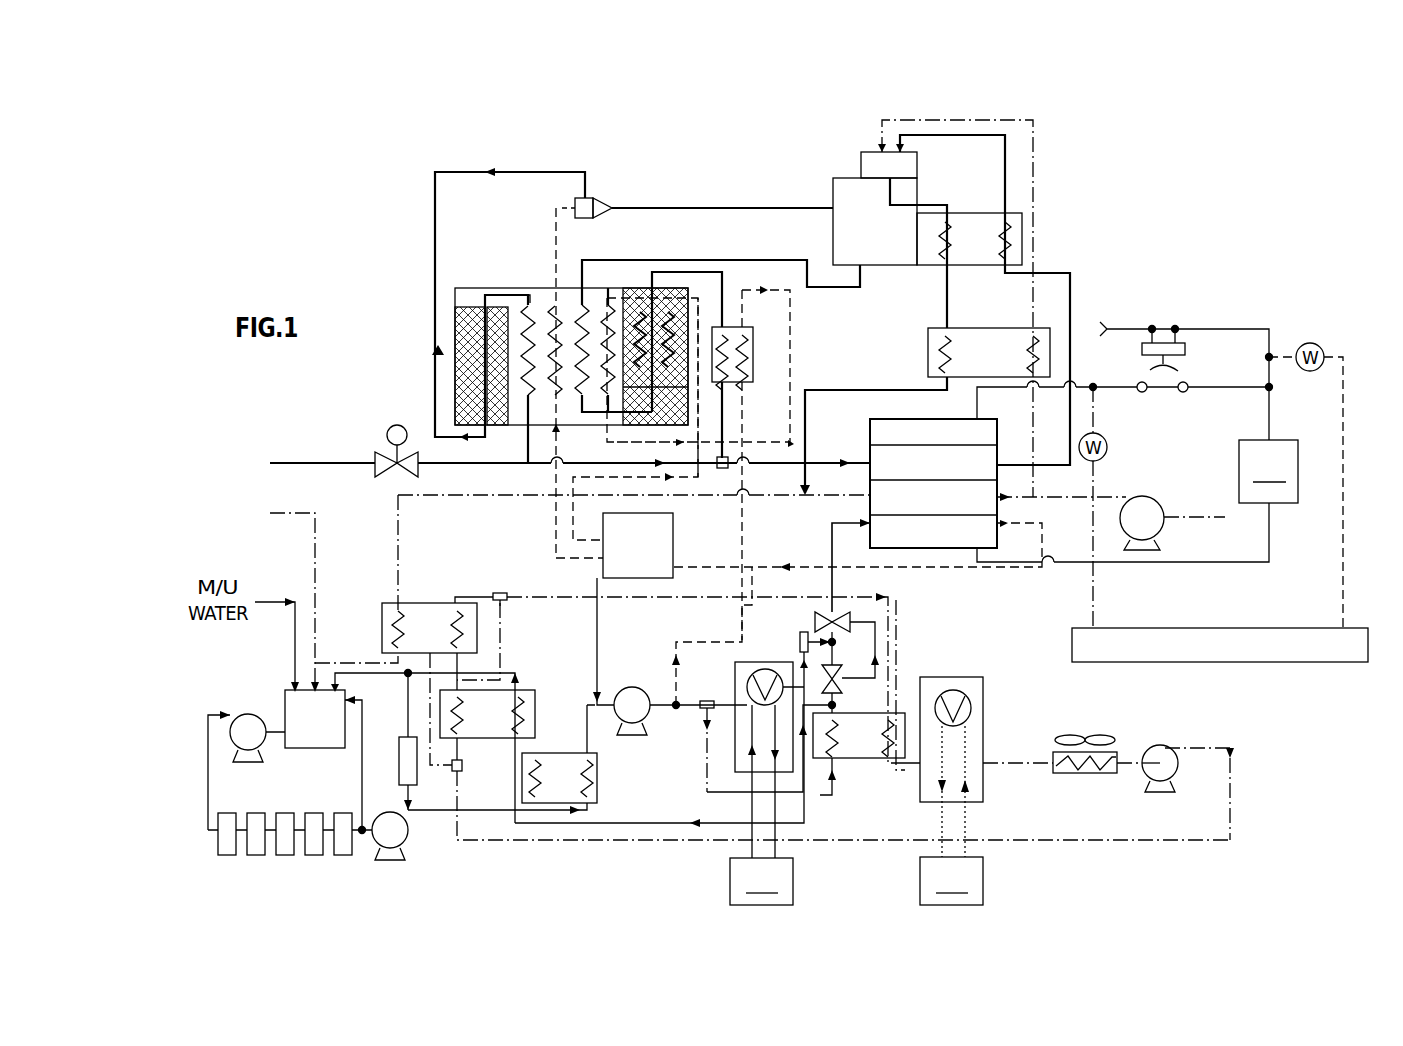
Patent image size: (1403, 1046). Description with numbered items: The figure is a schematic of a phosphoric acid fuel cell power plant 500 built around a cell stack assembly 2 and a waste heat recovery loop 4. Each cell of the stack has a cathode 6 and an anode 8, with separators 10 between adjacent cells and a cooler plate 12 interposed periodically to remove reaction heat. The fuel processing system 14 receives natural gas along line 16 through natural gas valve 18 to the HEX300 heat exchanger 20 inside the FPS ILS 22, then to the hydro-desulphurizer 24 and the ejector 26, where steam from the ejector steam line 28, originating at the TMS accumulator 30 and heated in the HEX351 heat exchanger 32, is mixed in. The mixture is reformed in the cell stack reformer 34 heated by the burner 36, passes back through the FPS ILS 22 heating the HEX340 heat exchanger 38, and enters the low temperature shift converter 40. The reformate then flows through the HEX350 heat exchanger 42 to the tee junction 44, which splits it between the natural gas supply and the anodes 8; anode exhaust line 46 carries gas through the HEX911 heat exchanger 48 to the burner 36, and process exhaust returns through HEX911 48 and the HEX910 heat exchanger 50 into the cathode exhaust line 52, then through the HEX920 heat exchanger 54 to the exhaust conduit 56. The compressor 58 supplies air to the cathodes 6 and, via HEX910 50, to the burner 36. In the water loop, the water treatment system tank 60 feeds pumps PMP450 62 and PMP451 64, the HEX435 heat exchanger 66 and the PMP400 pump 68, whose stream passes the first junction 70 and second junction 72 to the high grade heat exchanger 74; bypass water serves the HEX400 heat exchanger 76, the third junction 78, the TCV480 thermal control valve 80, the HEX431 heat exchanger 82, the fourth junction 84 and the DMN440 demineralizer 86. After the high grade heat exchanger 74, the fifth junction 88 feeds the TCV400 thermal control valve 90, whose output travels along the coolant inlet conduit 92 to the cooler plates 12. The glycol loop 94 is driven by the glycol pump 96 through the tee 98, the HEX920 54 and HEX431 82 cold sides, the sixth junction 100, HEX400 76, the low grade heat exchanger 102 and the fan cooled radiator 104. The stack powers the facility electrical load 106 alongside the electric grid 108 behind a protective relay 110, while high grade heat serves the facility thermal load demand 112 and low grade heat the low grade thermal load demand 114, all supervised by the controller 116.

The phosphoric acid fuel cell power plant 500 is at (330, 160).
The cell stack assembly 2 is at (857, 482).
The waste heat recovery loop 4 is at (1092, 750).
The cathode 6 is at (870, 505).
The anode 8 is at (870, 471).
The separator 10 is at (966, 419).
The cooler plate 12 is at (997, 541).
The fuel processing system 14 is at (1068, 208).
The natural gas supply line 16 is at (335, 461).
The natural gas valve 18 is at (392, 428).
The HEX300 heat exchanger 20 is at (527, 432).
The fuel processing system integrated low temperature shift converter assembly 22 is at (520, 288).
The hydro-desulphurizer 24 is at (458, 322).
The ejector 26 is at (592, 199).
The ejector steam line 28 is at (556, 225).
The thermal management system accumulator 30 is at (673, 545).
The HEX351 heat exchanger 32 is at (553, 305).
The cell stack reformer 34 is at (833, 200).
The burner 36 is at (861, 165).
The HEX340 heat exchanger 38 is at (610, 312).
The low temperature shift converter 40 is at (670, 290).
The HEX350 heat exchanger 42 is at (742, 334).
The tee junction 44 is at (722, 469).
The anode exhaust line 46 is at (1070, 292).
The HEX911 heat exchanger 48 is at (977, 213).
The HEX910 heat exchanger 50 is at (935, 328).
The cathode exhaust line 52 is at (452, 496).
The HEX920 heat exchanger 54 is at (390, 604).
The exhaust conduit 56 is at (315, 553).
The compressor 58 is at (1144, 496).
The water treatment system tank 60 is at (285, 703).
The PMP450 pump 62 is at (241, 716).
The PMP451 pump 64 is at (405, 845).
The HEX435 heat exchanger 66 is at (597, 822).
The PMP400 pump 68 is at (632, 690).
The first junction 70 is at (677, 709).
The second junction 72 is at (707, 700).
The high grade heat exchanger 74 is at (765, 670).
The HEX400 heat exchanger 76 is at (835, 786).
The third junction 78 is at (843, 709).
The TCV480 thermal control valve 80 is at (838, 672).
The HEX431 heat exchanger 82 is at (526, 691).
The fourth junction 84 is at (405, 676).
The DMN440 demineralizer 86 is at (399, 768).
The fifth junction 88 is at (800, 640).
The TCV400 thermal control valve 90 is at (850, 602).
The coolant inlet conduit 92 is at (832, 552).
The glycol loop 94 is at (1235, 780).
The glycol pump 96 is at (1150, 748).
The tee 98 is at (462, 769).
The sixth junction 100 is at (498, 592).
The low grade heat exchanger 102 is at (958, 678).
The fan cooled radiator 104 is at (1064, 773).
The facility electrical load 106 is at (1137, 501).
The electric grid 108 is at (1110, 329).
The protective relay 110 is at (1178, 368).
The facility thermal load demand 112 is at (761, 881).
The low grade thermal load demand 114 is at (951, 881).
The supervisory controller 116 is at (1265, 662).